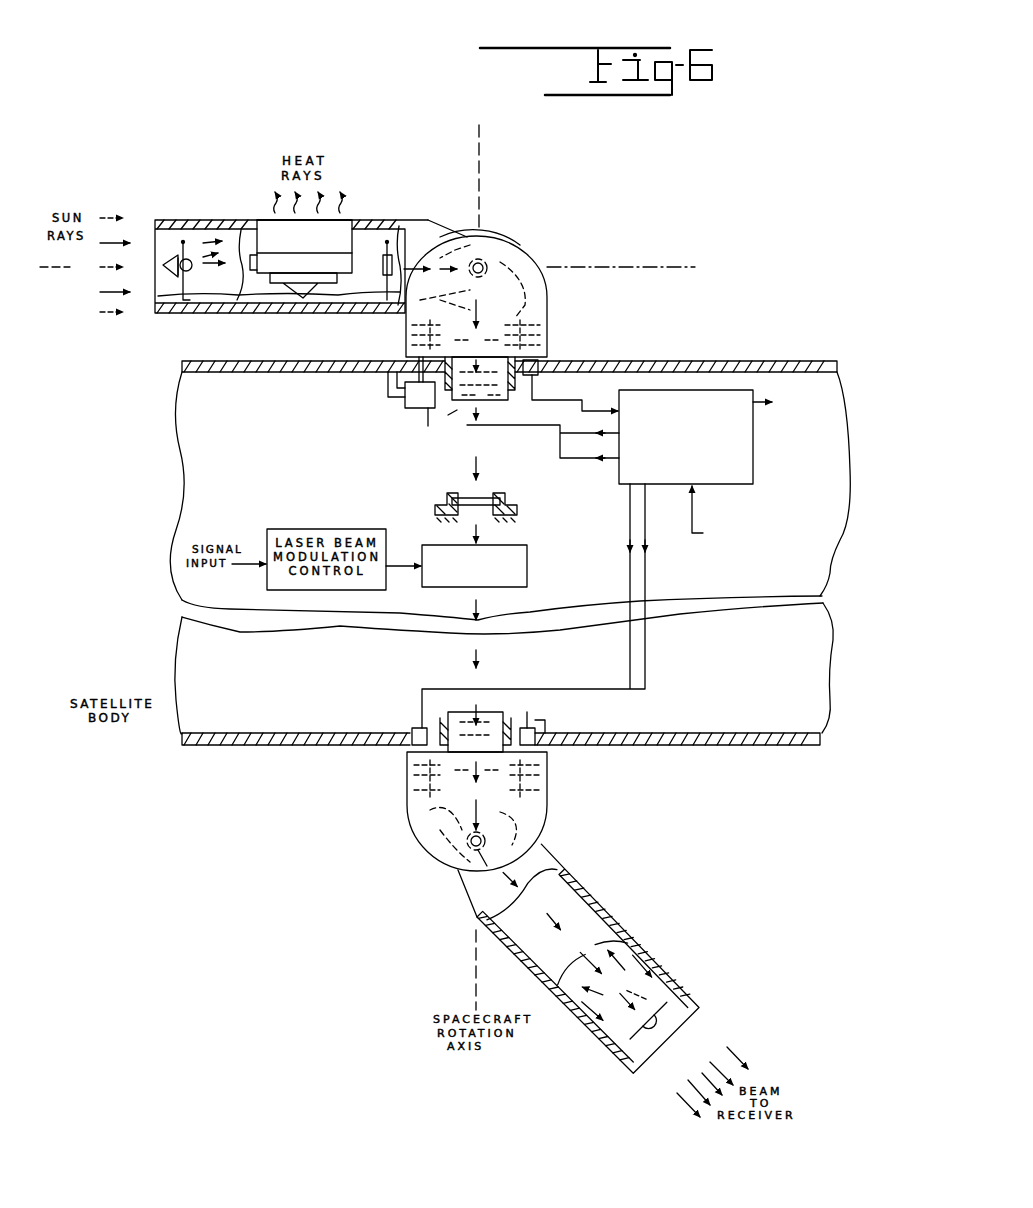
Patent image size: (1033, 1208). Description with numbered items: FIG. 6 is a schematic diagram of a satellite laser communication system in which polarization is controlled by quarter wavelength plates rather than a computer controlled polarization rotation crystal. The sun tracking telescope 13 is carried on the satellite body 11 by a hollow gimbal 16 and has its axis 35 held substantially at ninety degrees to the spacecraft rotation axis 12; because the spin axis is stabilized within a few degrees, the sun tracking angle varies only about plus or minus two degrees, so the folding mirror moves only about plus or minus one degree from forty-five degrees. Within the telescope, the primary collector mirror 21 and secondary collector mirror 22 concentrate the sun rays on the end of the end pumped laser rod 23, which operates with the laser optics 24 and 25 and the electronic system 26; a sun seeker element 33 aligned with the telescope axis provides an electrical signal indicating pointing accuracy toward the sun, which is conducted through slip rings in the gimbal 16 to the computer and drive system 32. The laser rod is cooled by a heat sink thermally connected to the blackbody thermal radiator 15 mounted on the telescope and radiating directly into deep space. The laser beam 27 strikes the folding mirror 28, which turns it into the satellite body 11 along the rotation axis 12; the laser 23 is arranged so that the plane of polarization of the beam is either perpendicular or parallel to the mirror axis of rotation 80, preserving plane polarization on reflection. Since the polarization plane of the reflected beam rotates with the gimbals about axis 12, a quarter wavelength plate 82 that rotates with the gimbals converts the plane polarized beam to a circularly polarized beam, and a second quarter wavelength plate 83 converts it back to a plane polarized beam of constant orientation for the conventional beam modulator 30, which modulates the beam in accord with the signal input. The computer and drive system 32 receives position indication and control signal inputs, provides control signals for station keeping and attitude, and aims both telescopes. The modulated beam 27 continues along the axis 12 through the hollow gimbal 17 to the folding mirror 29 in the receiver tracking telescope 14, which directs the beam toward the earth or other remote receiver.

The satellite body 11 is at (810, 362).
The axis of rotation 12 is at (484, 137).
The sun tracking telescope 13 is at (173, 220).
The receiver tracking telescope 14 is at (599, 906).
The thermal radiator 15 is at (343, 219).
The hollow gimbal 16 is at (550, 290).
The hollow gimbal 17 is at (420, 838).
The primary collector mirror 21 is at (228, 296).
The secondary collector mirror 22 is at (190, 258).
The laser rod 23 is at (301, 259).
The laser optics 24 is at (243, 232).
The laser optics 25 is at (398, 226).
The electronic system 26 is at (300, 300).
The laser beam 27 is at (418, 268).
The folding mirror 28 is at (482, 236).
The folding mirror 29 is at (453, 872).
The beam modulator 30 is at (530, 565).
The computer and drive system 32 is at (753, 445).
The sun seeker element 33 is at (168, 282).
The axis of the sun tracking telescope tube 35 is at (56, 274).
The mirror axis of rotation 80 is at (486, 262).
The quarter wavelength plate 82 is at (426, 424).
The quarter wavelength plate 83 is at (470, 508).